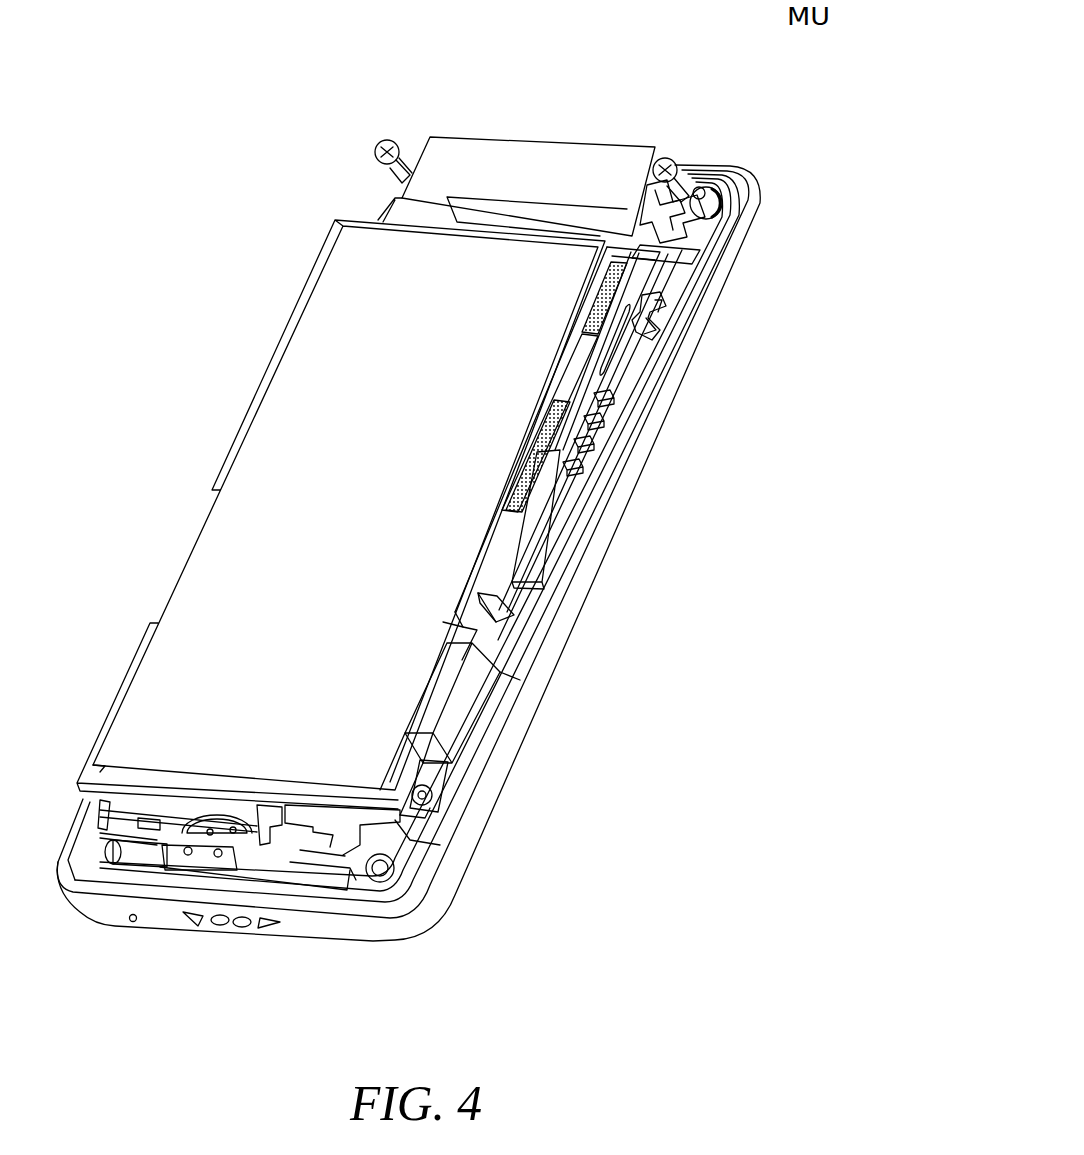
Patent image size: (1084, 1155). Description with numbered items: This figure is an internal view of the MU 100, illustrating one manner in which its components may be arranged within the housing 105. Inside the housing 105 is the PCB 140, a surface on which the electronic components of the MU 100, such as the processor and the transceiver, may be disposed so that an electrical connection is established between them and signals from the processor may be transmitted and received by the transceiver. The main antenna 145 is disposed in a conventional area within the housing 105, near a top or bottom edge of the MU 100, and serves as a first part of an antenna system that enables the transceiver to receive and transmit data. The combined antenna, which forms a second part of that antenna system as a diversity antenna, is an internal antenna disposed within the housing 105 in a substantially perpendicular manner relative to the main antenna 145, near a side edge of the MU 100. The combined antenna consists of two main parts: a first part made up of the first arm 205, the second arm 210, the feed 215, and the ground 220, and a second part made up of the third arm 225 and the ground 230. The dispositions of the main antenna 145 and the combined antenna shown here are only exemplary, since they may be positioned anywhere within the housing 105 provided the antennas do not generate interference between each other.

The MU 100 is at (830, 65).
The housing 105 is at (380, 942).
The PCB 140 is at (434, 777).
The main antenna 145 is at (240, 850).
The first arm 205 is at (570, 442).
The second arm 210 is at (628, 240).
The feed 215 is at (655, 328).
The ground 220 is at (602, 300).
The third arm 225 is at (512, 508).
The ground 230 is at (503, 613).